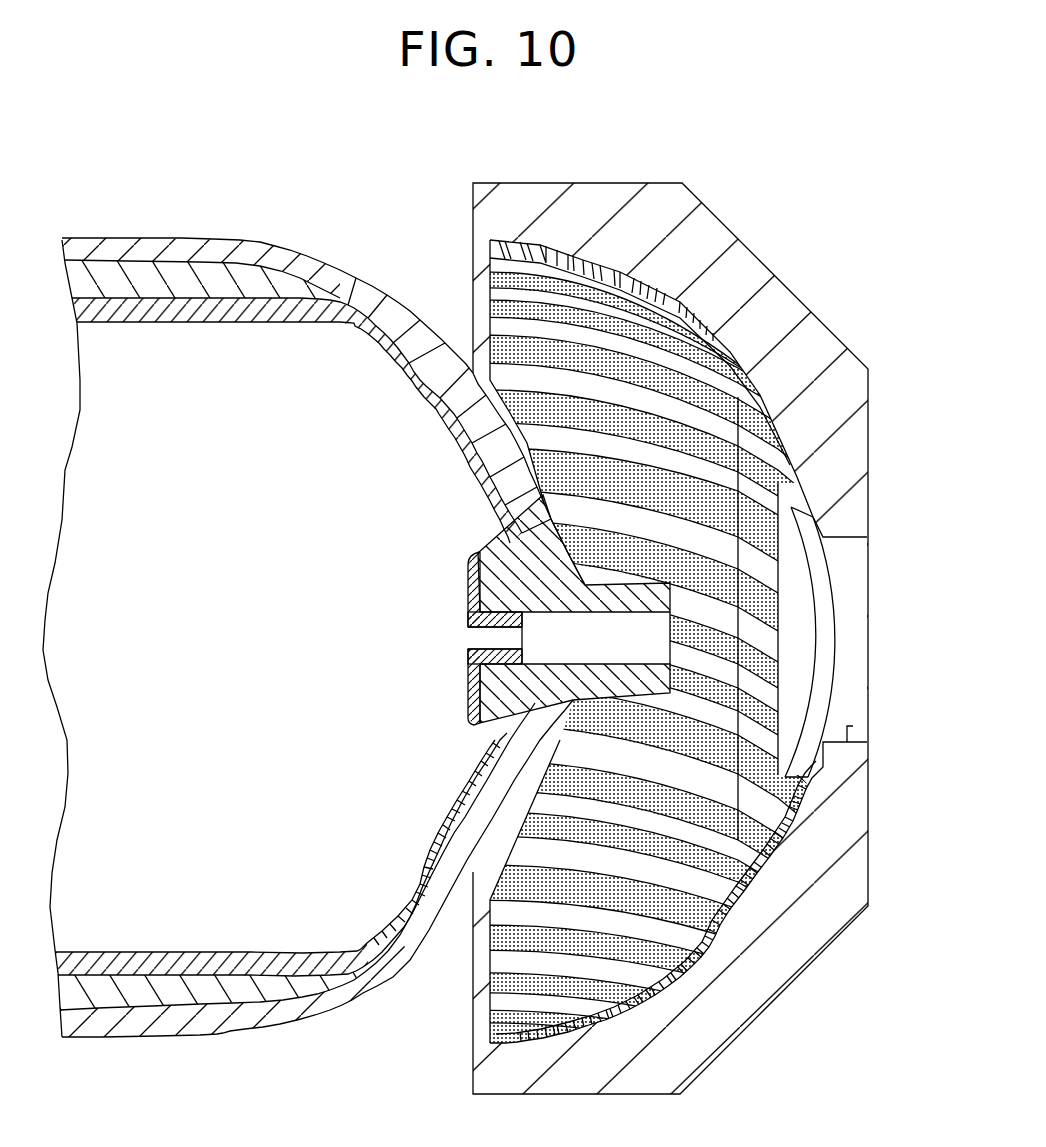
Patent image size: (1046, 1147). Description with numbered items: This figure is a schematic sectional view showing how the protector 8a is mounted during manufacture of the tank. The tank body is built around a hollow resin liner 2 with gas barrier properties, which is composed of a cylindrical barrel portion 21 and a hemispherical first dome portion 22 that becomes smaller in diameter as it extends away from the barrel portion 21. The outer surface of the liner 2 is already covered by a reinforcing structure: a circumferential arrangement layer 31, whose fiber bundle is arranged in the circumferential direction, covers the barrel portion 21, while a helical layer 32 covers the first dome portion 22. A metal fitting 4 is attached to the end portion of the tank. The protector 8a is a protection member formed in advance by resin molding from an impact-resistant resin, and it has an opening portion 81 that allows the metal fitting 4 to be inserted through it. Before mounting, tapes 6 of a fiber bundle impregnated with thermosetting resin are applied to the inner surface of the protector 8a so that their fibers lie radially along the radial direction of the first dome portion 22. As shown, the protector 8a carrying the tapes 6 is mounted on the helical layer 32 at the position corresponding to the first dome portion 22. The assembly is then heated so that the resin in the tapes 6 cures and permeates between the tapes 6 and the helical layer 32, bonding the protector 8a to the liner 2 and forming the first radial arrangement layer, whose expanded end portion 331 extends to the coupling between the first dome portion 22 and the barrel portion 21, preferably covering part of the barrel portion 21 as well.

The liner 2 is at (163, 325).
The barrel portion 21 is at (220, 326).
The first dome portion 22 is at (443, 412).
The circumferential arrangement layer 31 is at (134, 280).
The helical layer 32 is at (236, 250).
The expanded end portion 331 is at (488, 234).
The metal fitting 4 is at (623, 680).
The tapes 6 is at (520, 337).
The protector 8a is at (770, 270).
The opening portion 81 is at (853, 729).